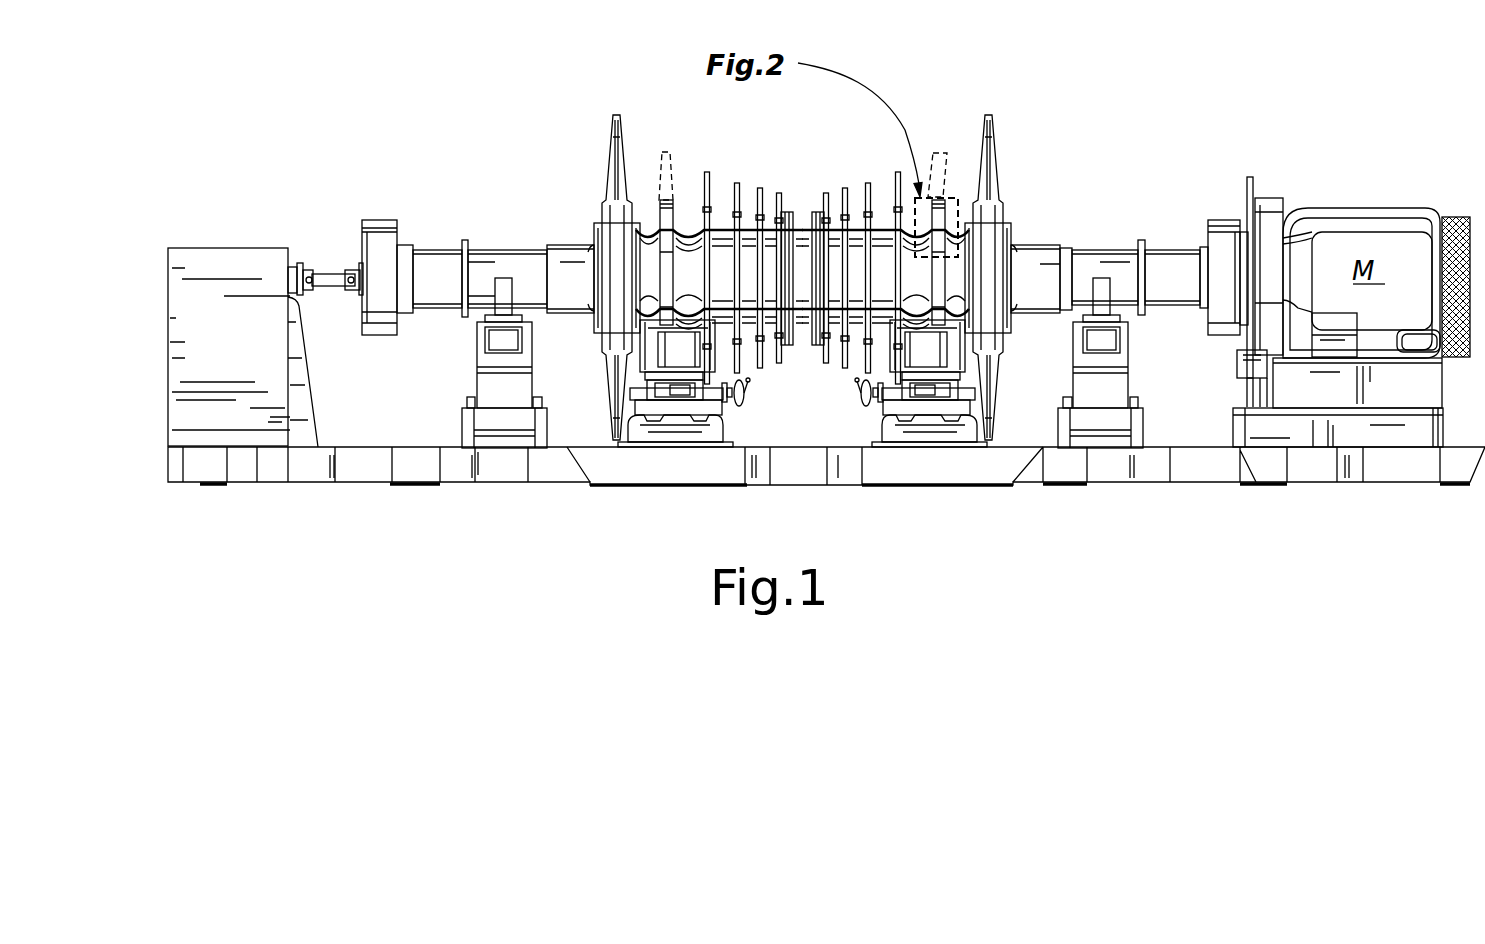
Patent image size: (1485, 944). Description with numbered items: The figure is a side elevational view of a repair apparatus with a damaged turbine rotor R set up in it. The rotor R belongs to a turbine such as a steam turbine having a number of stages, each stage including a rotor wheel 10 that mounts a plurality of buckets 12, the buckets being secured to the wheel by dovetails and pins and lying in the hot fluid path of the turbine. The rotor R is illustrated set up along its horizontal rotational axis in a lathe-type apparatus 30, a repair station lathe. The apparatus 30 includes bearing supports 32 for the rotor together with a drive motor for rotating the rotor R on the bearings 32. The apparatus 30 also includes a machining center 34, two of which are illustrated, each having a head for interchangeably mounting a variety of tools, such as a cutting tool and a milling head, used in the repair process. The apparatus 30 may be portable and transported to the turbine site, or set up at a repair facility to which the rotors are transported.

The rotor R is at (527, 143).
The rotor wheel 10 is at (888, 207).
The buckets 12 is at (951, 150).
The lathe-type apparatus 30 is at (444, 516).
The bearing supports 32 is at (480, 370).
The machining center 34 is at (713, 435).